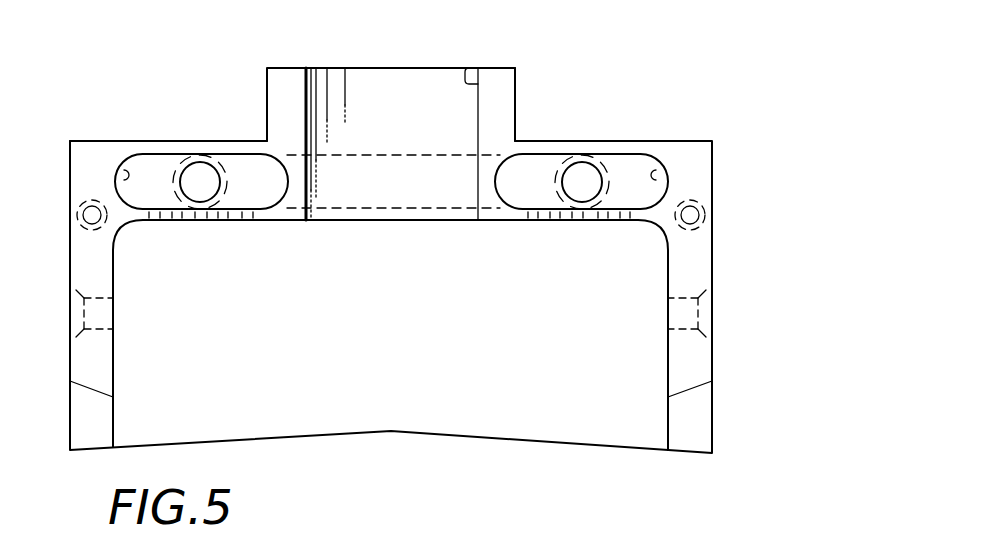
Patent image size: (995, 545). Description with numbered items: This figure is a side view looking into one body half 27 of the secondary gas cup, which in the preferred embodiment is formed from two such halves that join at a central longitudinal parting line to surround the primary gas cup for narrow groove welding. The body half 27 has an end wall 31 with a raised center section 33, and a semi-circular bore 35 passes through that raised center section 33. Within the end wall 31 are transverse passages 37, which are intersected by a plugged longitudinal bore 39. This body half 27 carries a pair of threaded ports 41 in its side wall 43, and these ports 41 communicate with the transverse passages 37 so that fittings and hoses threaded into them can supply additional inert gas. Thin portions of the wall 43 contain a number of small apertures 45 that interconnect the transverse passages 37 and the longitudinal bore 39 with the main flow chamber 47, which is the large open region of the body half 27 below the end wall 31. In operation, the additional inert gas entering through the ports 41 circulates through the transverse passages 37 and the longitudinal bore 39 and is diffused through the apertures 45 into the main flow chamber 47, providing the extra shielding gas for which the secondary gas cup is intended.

The body half 27 is at (607, 83).
The end wall 31 is at (141, 140).
The raised center section 33 is at (507, 80).
The semi-circular bore 35 is at (468, 74).
The transverse passage 37 is at (124, 178).
The plugged longitudinal bore 39 is at (378, 212).
The threaded port 41 is at (200, 172).
The side wall 43 is at (157, 222).
The small aperture 45 is at (197, 220).
The main flow chamber 47 is at (647, 374).